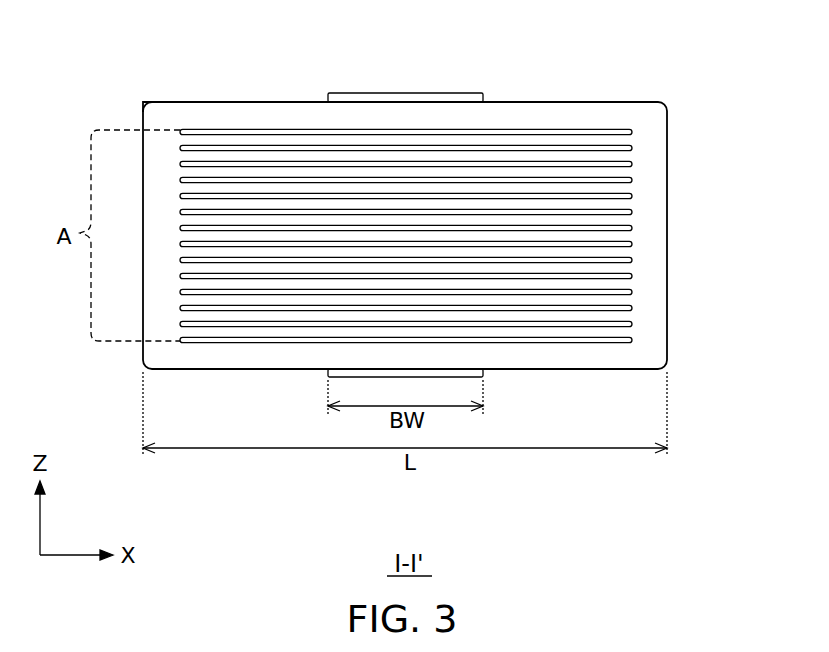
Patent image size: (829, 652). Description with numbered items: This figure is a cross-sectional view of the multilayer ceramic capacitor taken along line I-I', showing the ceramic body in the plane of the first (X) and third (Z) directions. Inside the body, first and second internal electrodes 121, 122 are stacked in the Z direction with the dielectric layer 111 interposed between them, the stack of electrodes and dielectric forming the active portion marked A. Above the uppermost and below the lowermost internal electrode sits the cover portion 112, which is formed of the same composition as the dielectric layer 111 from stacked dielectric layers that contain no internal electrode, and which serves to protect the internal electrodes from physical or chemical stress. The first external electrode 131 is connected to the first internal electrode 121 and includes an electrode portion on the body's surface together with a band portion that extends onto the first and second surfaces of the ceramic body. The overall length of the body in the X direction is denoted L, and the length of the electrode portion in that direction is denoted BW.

The dielectric layer 111 is at (658, 245).
The cover portion 112 is at (168, 110).
The first internal electrode 121 is at (634, 131).
The second internal electrode 122 is at (634, 148).
The first external electrode 131 is at (433, 92).